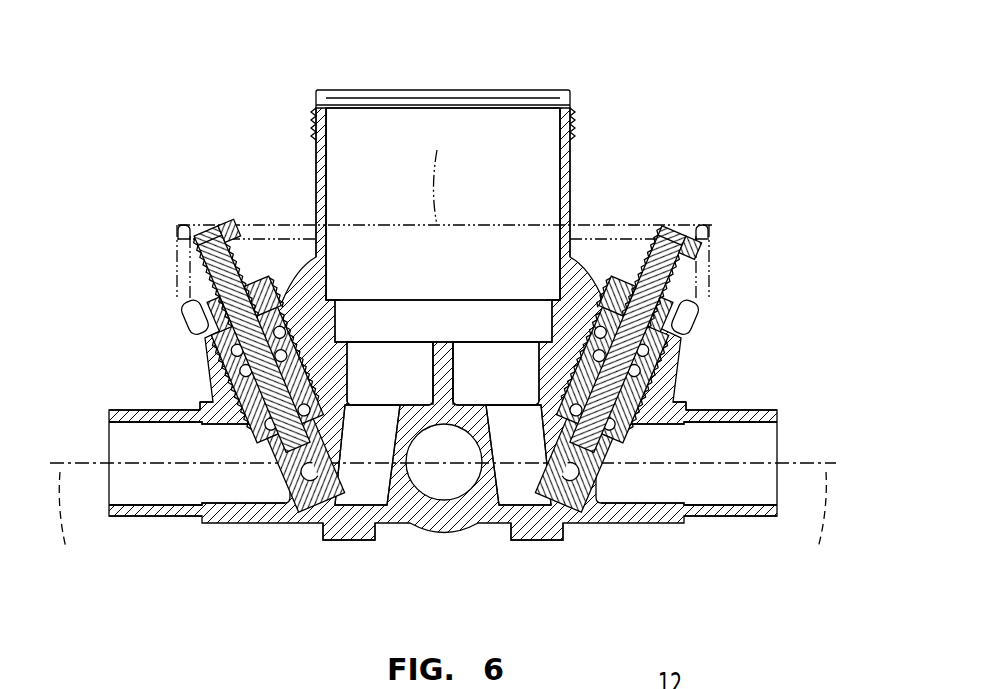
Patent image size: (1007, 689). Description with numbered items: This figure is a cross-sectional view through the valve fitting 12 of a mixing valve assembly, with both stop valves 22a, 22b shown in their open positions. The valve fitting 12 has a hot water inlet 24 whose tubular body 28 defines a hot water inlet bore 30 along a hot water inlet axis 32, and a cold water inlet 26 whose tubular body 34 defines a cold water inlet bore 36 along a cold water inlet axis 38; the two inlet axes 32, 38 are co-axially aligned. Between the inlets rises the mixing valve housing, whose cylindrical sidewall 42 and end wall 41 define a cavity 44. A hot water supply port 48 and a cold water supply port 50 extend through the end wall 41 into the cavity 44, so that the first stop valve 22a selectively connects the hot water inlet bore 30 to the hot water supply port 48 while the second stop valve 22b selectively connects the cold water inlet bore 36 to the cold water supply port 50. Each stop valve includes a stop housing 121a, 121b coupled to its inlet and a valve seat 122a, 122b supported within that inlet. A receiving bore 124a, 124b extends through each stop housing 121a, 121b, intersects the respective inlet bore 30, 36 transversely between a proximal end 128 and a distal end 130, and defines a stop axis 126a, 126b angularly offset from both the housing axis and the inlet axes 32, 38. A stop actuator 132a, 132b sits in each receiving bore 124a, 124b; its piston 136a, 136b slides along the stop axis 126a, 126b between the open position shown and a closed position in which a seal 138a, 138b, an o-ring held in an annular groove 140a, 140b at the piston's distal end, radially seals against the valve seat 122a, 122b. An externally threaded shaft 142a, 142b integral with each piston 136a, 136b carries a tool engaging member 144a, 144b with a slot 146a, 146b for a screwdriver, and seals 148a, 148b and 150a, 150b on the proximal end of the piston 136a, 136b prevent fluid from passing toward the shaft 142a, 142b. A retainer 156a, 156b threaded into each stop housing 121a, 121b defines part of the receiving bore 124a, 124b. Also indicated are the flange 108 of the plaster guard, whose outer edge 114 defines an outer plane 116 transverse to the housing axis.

The valve fitting 12 is at (600, 90).
The first stop valve 22a is at (219, 281).
The second stop valve 22b is at (659, 276).
The hot water inlet 24 is at (122, 518).
The cold water inlet 26 is at (764, 518).
The tubular body 28 is at (150, 518).
The hot water inlet bore 30 is at (148, 452).
The hot water inlet axis 32 is at (61, 522).
The tubular body 34 is at (722, 518).
The cold water inlet bore 36 is at (740, 452).
The cold water inlet axis 38 is at (817, 522).
The end wall 41 is at (445, 300).
The cylindrical sidewall 42 is at (316, 150).
The cavity 44 is at (490, 130).
The hot water supply port 48 is at (362, 478).
The cold water supply port 50 is at (525, 478).
The flange 108 is at (708, 296).
The outer edge 114 is at (713, 213).
The outer plane 116 is at (437, 169).
The first stop housing 121a is at (268, 375).
The second stop housing 121b is at (613, 375).
The first valve seat 122a is at (308, 472).
The second valve seat 122b is at (571, 472).
The first receiving bore 124a is at (318, 280).
The second receiving bore 124b is at (566, 280).
The first stop axis 126a is at (214, 249).
The second stop axis 126b is at (666, 249).
The proximal end 128 is at (172, 241).
The distal end 130 is at (314, 525).
The first stop actuator 132a is at (264, 296).
The second stop actuator 132b is at (615, 296).
The first piston 136a is at (211, 398).
The second piston 136b is at (676, 398).
The first seal 138a is at (352, 392).
The second seal 138b is at (545, 400).
The first annular groove 140a is at (305, 465).
The second annular groove 140b is at (573, 465).
The first externally threaded shaft 142a is at (219, 314).
The second externally threaded shaft 142b is at (660, 314).
The first tool engaging member 144a is at (258, 336).
The second tool engaging member 144b is at (634, 342).
The first slot 146a is at (210, 240).
The second slot 146b is at (670, 240).
The first proximal seal 148a is at (327, 289).
The second proximal seal 148b is at (560, 289).
The first proximal seal 150a is at (337, 333).
The second proximal seal 150b is at (550, 333).
The first retainer 156a is at (195, 317).
The second retainer 156b is at (685, 317).